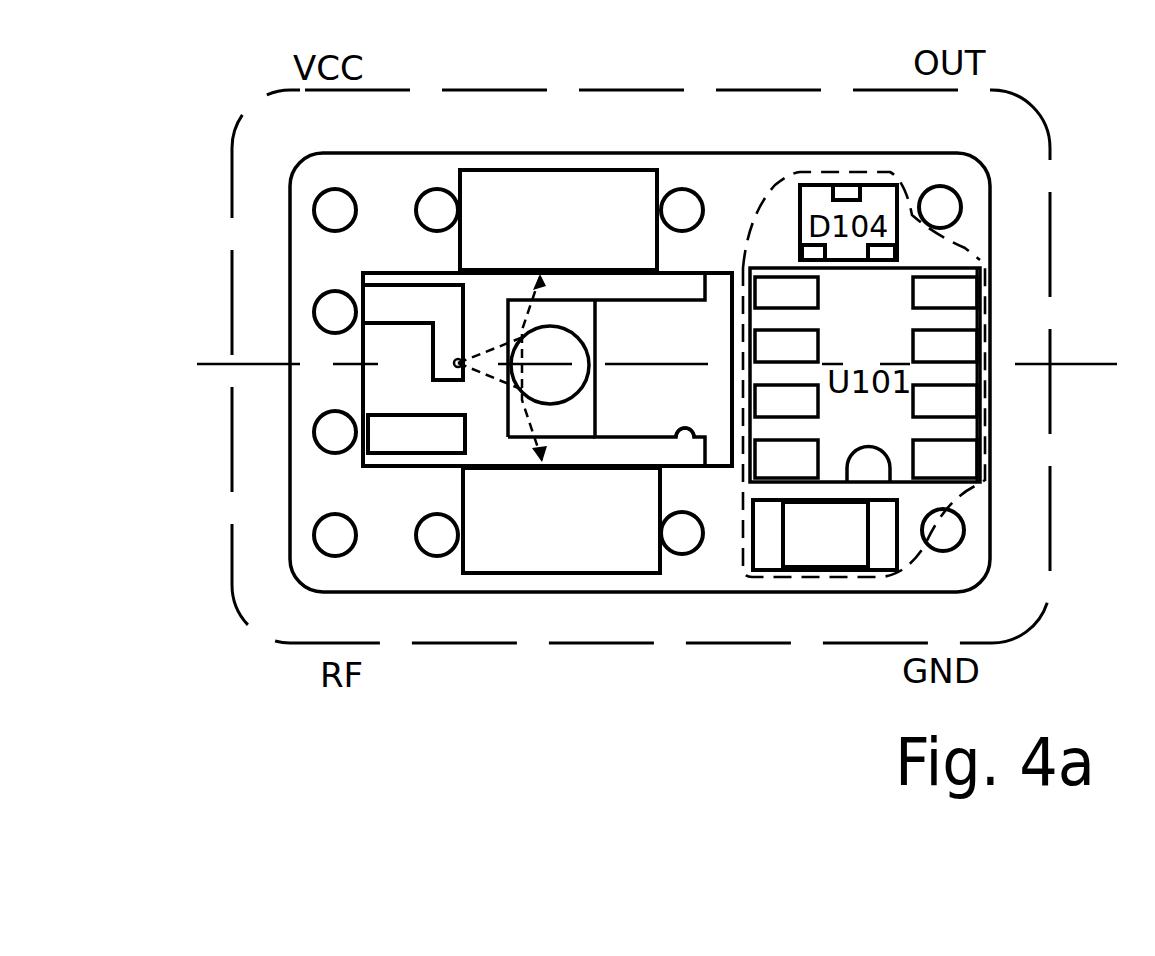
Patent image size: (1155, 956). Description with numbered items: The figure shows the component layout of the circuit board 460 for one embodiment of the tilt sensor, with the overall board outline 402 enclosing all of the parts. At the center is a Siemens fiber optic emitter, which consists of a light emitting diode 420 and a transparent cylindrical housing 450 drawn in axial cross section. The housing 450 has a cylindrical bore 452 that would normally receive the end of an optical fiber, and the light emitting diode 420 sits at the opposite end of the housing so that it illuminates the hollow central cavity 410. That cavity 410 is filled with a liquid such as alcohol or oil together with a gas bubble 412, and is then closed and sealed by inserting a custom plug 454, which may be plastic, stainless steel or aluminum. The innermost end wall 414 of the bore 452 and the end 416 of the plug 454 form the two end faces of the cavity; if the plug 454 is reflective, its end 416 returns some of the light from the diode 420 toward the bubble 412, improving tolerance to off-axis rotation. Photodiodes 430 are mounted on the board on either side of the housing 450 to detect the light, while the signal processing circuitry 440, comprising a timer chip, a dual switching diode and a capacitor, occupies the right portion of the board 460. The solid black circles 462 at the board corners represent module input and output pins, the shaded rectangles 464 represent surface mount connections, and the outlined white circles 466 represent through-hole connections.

The circuit board 402 is at (1068, 363).
The hollow central cavity 410 is at (568, 320).
The gas bubble 412 is at (573, 390).
The innermost end wall 414 is at (528, 440).
The end of plug 416 is at (600, 397).
The light emitting diode 420 is at (458, 363).
The photodiode 430 is at (582, 170).
The signal processing circuitry 440 is at (985, 257).
The transparent cylindrical housing 450 is at (367, 273).
The cylindrical bore 452 is at (695, 440).
The plug 454 is at (740, 232).
The circuit board 460 is at (307, 500).
The module I/O pins 462 is at (327, 547).
The surface mount connections 464 is at (953, 462).
The through-hole connections 466 is at (445, 547).